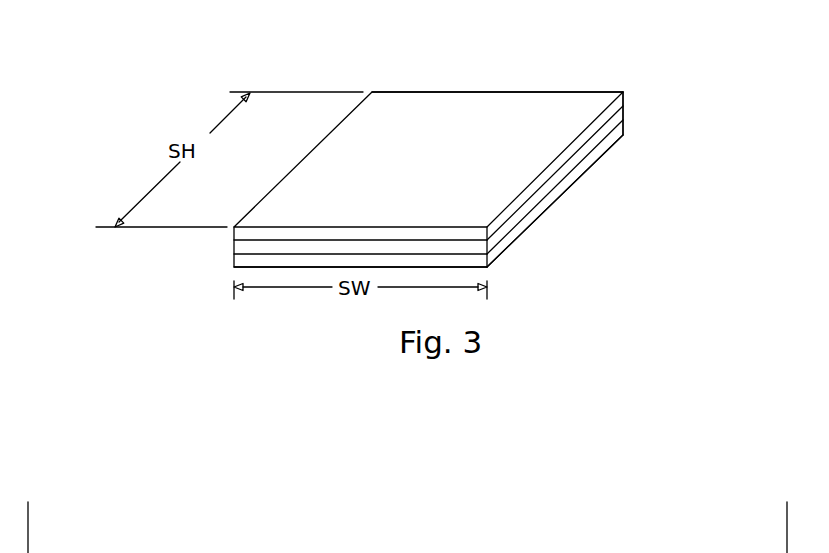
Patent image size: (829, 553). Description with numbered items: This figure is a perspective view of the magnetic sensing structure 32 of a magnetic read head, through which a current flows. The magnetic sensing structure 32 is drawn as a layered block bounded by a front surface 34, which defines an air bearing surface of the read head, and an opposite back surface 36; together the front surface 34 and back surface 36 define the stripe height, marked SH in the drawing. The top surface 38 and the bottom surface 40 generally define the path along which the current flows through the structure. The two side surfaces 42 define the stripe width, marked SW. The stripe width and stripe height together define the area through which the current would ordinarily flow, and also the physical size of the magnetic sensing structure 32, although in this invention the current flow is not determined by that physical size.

The magnetic sensing structure 32 is at (338, 58).
The front surface 34 is at (255, 252).
The back surface 36 is at (608, 88).
The top surface 38 is at (443, 120).
The bottom surface 40 is at (513, 247).
The side surfaces 42 is at (283, 177).